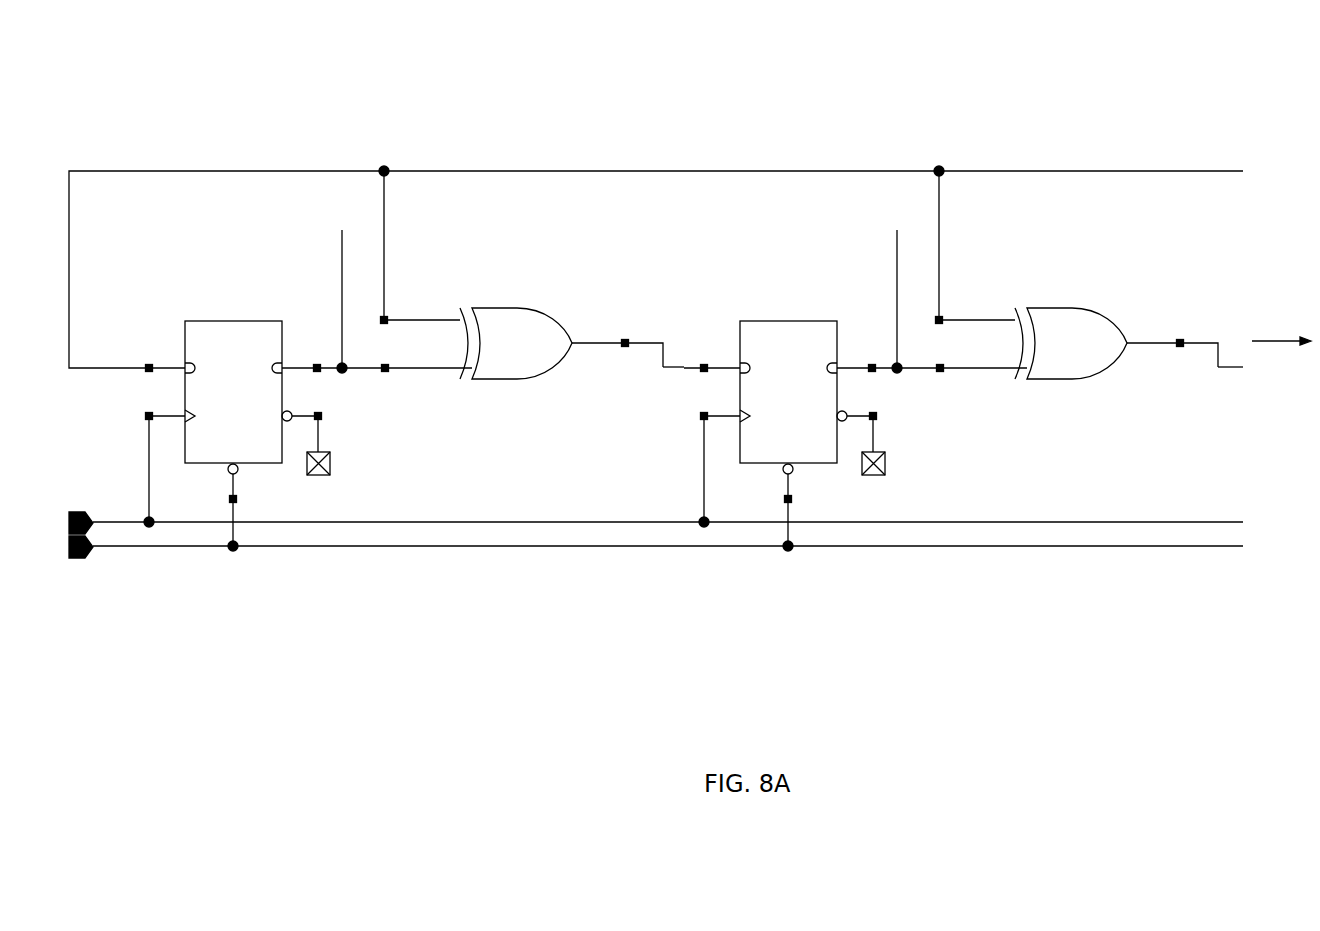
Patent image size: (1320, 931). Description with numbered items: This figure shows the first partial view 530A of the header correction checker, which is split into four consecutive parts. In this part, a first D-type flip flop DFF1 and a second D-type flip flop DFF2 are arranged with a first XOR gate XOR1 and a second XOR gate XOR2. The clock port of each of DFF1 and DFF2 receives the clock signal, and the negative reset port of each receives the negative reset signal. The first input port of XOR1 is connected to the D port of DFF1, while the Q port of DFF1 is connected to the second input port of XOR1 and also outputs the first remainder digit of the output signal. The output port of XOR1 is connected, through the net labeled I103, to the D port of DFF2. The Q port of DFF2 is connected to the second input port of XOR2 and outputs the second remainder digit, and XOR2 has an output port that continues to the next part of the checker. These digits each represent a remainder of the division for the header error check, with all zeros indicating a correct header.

The partial view of header correction checker 530A is at (1087, 125).
The first D-type flip flop DFF1 is at (238, 398).
The second D-type flip flop DFF2 is at (793, 398).
The first XOR gate XOR1 is at (535, 351).
The second XOR gate XOR2 is at (1090, 351).
The net between XOR1 output and DFF2 input I103 is at (617, 327).